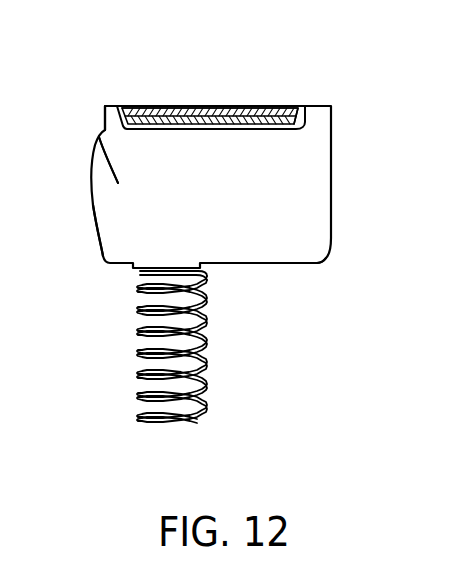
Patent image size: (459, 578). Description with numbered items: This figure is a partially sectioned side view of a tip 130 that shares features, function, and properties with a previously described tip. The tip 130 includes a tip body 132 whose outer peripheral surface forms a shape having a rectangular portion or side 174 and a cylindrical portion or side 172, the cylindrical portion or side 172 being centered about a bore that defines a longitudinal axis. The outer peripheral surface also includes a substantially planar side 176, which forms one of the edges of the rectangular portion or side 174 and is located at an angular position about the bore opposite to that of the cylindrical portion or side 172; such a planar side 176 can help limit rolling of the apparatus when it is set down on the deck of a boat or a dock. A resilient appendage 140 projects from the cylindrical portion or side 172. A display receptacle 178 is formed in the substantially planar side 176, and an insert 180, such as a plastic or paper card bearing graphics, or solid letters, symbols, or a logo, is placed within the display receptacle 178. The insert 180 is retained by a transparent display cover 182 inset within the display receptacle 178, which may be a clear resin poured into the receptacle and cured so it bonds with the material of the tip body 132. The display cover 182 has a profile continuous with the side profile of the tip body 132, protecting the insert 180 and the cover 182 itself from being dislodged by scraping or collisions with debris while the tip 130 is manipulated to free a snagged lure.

The tip 130 is at (372, 119).
The tip body 132 is at (323, 265).
The resilient appendage 140 is at (208, 352).
The cylindrical portion or side 172 is at (97, 246).
The rectangular portion or side 174 is at (102, 128).
The substantially planar side 176 is at (107, 106).
The display receptacle 178 is at (287, 106).
The insert 180 is at (180, 122).
The transparent display cover 182 is at (230, 104).